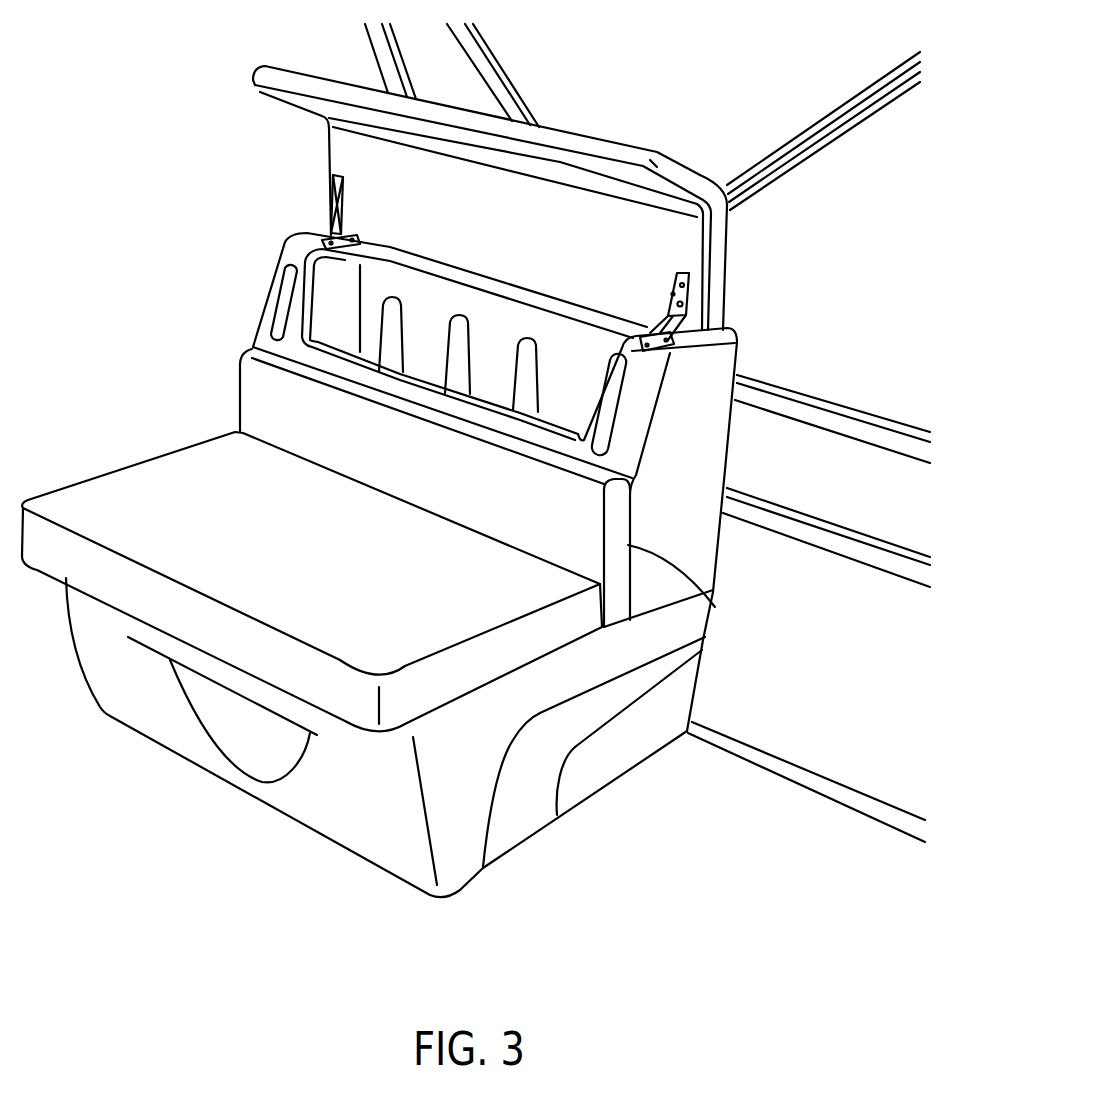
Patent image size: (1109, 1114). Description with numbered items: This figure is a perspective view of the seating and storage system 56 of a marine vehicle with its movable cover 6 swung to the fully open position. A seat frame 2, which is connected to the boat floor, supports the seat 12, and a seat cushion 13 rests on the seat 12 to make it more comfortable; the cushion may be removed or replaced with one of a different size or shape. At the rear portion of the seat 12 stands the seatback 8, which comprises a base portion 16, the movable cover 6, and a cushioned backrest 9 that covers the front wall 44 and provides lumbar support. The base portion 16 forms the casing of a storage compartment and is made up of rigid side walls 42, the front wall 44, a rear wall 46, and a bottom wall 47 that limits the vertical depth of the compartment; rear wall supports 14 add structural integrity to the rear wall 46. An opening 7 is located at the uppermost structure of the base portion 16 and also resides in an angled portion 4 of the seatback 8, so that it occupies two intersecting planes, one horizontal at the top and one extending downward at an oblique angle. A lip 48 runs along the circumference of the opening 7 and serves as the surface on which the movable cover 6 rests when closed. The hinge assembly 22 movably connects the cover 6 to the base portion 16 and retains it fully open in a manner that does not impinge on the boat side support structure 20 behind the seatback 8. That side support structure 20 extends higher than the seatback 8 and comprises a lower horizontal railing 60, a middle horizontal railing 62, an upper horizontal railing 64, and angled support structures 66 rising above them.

The seating and storage system 56 is at (186, 176).
The movable cover 6 is at (377, 163).
The angled support structures 66 is at (378, 55).
The hinge assembly 22 is at (327, 228).
The seatback 8 is at (228, 344).
The angled portion 4 is at (272, 285).
The cushioned backrest 9 is at (270, 390).
The rear wall supports 14 is at (387, 322).
The opening 7 is at (580, 392).
The lip 48 is at (632, 409).
The side walls 42 is at (700, 457).
The base portion 16 is at (700, 425).
The rear wall 46 is at (723, 543).
The front wall 44 is at (714, 604).
The bottom wall 47 is at (650, 610).
The seat cushion 13 is at (133, 488).
The seat 12 is at (545, 658).
The seat frame 2 is at (218, 730).
The boat side support structure 20 is at (873, 378).
The upper horizontal railing 64 is at (887, 437).
The middle horizontal railing 62 is at (873, 557).
The lower horizontal railing 60 is at (822, 787).